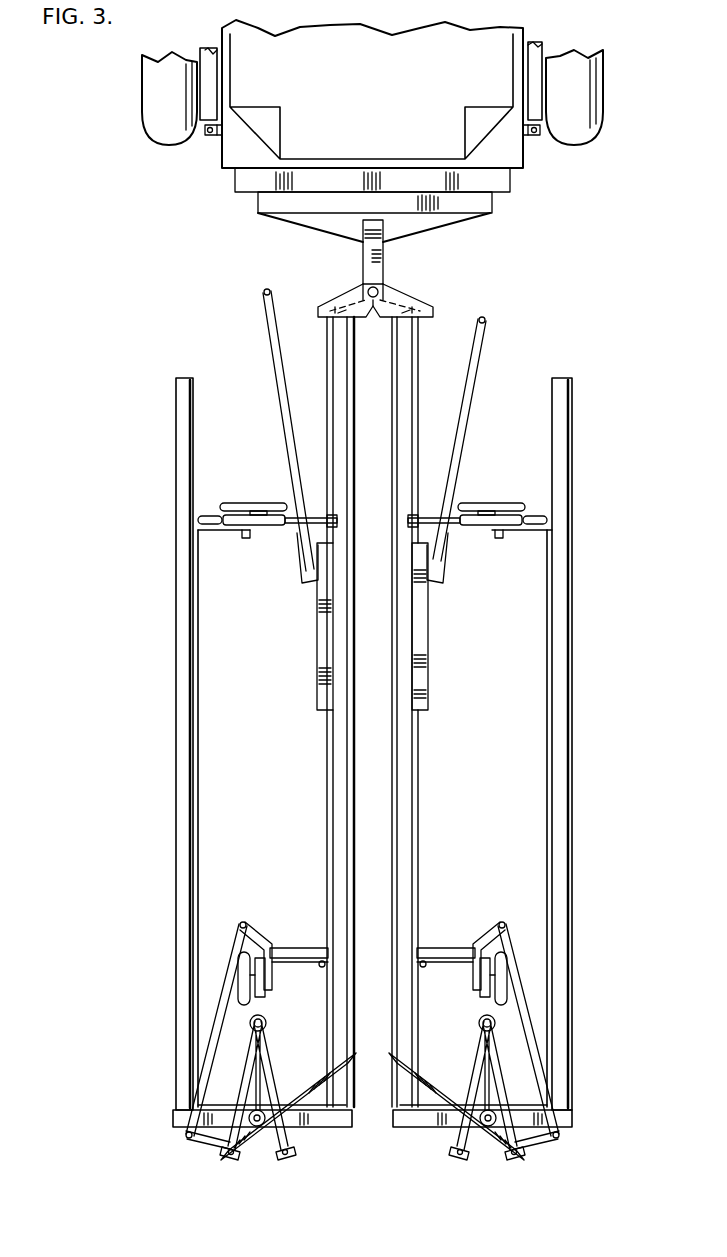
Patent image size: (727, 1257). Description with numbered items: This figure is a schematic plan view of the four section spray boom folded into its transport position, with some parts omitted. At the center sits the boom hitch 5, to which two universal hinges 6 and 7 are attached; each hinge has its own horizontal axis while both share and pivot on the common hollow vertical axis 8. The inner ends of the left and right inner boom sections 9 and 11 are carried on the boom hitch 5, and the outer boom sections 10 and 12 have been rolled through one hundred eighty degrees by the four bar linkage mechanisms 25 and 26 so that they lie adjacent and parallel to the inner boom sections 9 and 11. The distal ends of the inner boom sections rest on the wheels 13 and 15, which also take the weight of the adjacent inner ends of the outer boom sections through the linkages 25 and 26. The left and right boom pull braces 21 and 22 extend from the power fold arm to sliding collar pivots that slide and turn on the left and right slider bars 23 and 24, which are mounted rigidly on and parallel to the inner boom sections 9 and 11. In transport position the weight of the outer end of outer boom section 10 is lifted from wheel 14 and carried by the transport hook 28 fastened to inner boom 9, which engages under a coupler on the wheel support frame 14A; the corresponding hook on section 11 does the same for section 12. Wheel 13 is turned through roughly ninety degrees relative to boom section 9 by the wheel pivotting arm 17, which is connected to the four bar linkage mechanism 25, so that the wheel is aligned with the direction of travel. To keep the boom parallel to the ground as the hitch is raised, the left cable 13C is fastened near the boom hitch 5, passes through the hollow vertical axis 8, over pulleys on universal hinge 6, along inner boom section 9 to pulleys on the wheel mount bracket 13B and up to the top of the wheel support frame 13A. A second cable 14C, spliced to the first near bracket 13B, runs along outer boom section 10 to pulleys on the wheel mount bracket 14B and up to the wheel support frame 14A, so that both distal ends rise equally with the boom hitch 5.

The boom hitch 5 is at (384, 254).
The universal hinge 6 is at (326, 303).
The universal hinge 7 is at (428, 304).
The common vertical axis 8 is at (368, 291).
The inner boom section 9 is at (352, 392).
The outer boom section 10 is at (184, 412).
The inner boom section 11 is at (398, 420).
The outer boom section 12 is at (565, 410).
The wheel 13 is at (245, 1006).
The wheel support frame 13A is at (260, 998).
The wheel mount bracket 13B is at (297, 948).
The left cable 13C is at (332, 335).
The wheel 14 is at (252, 504).
The wheel support frame 14A is at (266, 504).
The wheel mount bracket 14B is at (246, 538).
The second cable 14C is at (199, 656).
The wheel 15 is at (494, 1010).
The wheel pivotting arm 17 is at (248, 921).
The left boom pull brace 21 is at (268, 344).
The right boom pull brace 22 is at (484, 340).
The left slider bar 23 is at (317, 687).
The right slider bar 24 is at (430, 690).
The four bar linkage mechanism 25 is at (258, 1143).
The four bar linkage mechanism 26 is at (477, 1143).
The transport hook 28 is at (316, 516).